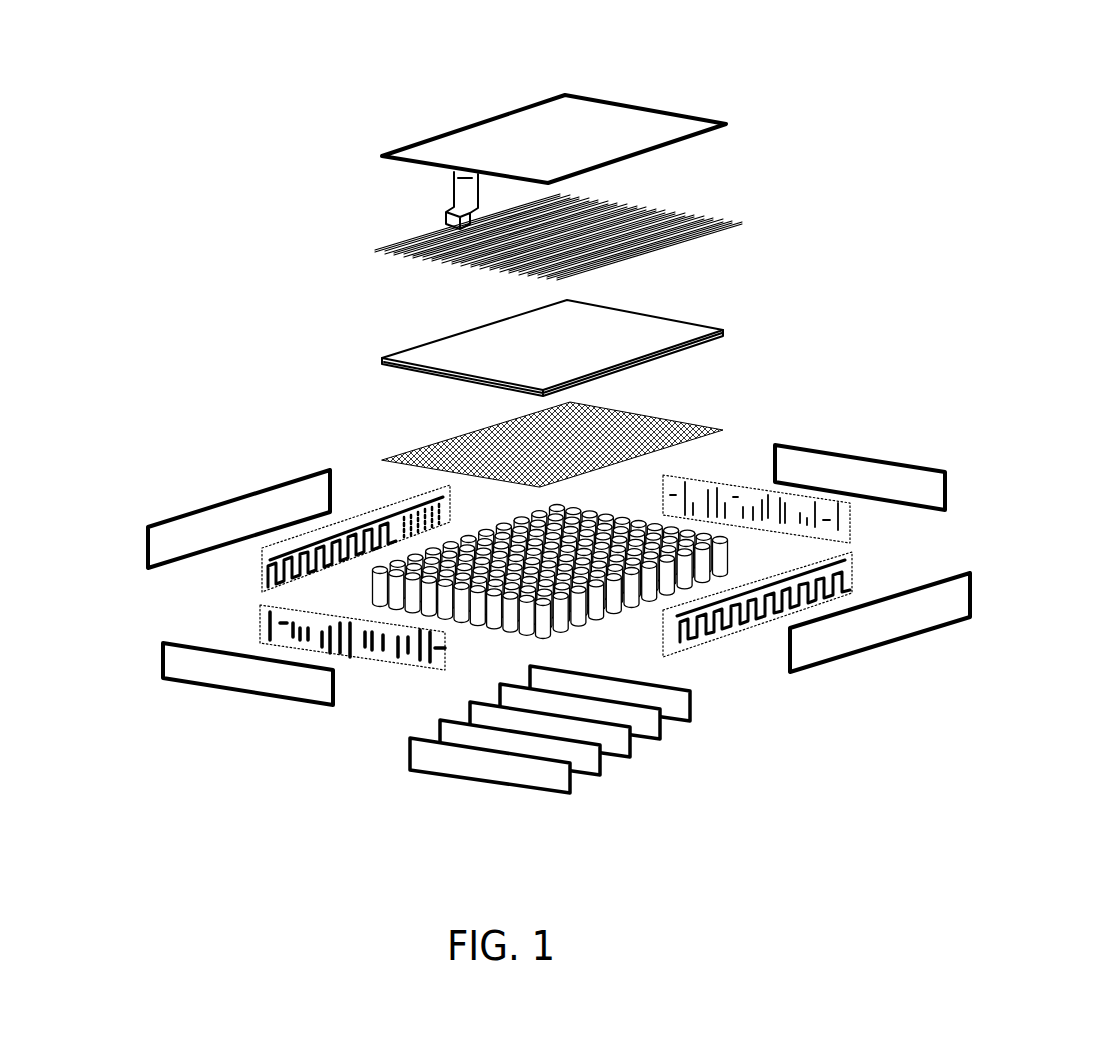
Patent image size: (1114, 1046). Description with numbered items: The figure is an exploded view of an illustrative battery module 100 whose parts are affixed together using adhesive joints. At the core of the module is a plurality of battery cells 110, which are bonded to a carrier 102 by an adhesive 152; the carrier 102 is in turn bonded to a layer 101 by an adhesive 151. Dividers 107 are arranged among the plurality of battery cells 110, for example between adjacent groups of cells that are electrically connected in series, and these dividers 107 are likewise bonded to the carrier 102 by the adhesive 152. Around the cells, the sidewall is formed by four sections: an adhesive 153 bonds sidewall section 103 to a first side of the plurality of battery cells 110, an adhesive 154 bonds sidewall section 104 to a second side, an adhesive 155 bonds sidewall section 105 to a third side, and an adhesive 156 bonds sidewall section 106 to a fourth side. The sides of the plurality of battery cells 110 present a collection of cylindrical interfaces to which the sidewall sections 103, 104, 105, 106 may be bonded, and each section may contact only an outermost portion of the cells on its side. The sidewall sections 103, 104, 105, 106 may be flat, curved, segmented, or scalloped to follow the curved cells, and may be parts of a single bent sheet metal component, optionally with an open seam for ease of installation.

The battery module 100 is at (1077, 65).
The layer 101 is at (532, 138).
The adhesive 151 is at (710, 212).
The carrier 102 is at (567, 344).
The adhesive 152 is at (683, 418).
The sidewall section 104 is at (150, 527).
The sidewall section 106 is at (168, 683).
The sidewall section 105 is at (922, 466).
The sidewall section 103 is at (950, 573).
The adhesive 154 is at (260, 573).
The adhesive 156 is at (385, 662).
The adhesive 155 is at (716, 482).
The adhesive 153 is at (722, 657).
The plurality of battery cells 110 is at (525, 566).
The dividers 107 is at (570, 793).